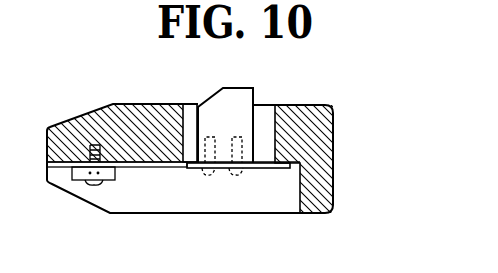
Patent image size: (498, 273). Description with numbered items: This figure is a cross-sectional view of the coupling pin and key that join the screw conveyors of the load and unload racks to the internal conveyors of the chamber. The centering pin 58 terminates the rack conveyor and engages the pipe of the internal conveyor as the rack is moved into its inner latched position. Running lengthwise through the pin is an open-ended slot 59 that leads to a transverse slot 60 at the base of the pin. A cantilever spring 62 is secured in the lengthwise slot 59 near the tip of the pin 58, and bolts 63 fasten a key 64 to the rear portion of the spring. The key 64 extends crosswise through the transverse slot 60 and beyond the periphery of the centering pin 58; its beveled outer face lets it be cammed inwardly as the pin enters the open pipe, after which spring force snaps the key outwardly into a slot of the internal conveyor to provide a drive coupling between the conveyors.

The centering pin 58 is at (322, 140).
The open-ended slot 59 is at (252, 203).
The transverse slot 60 is at (190, 107).
The cantilever spring 62 is at (155, 168).
The bolts 63 is at (243, 176).
The key 64 is at (244, 100).